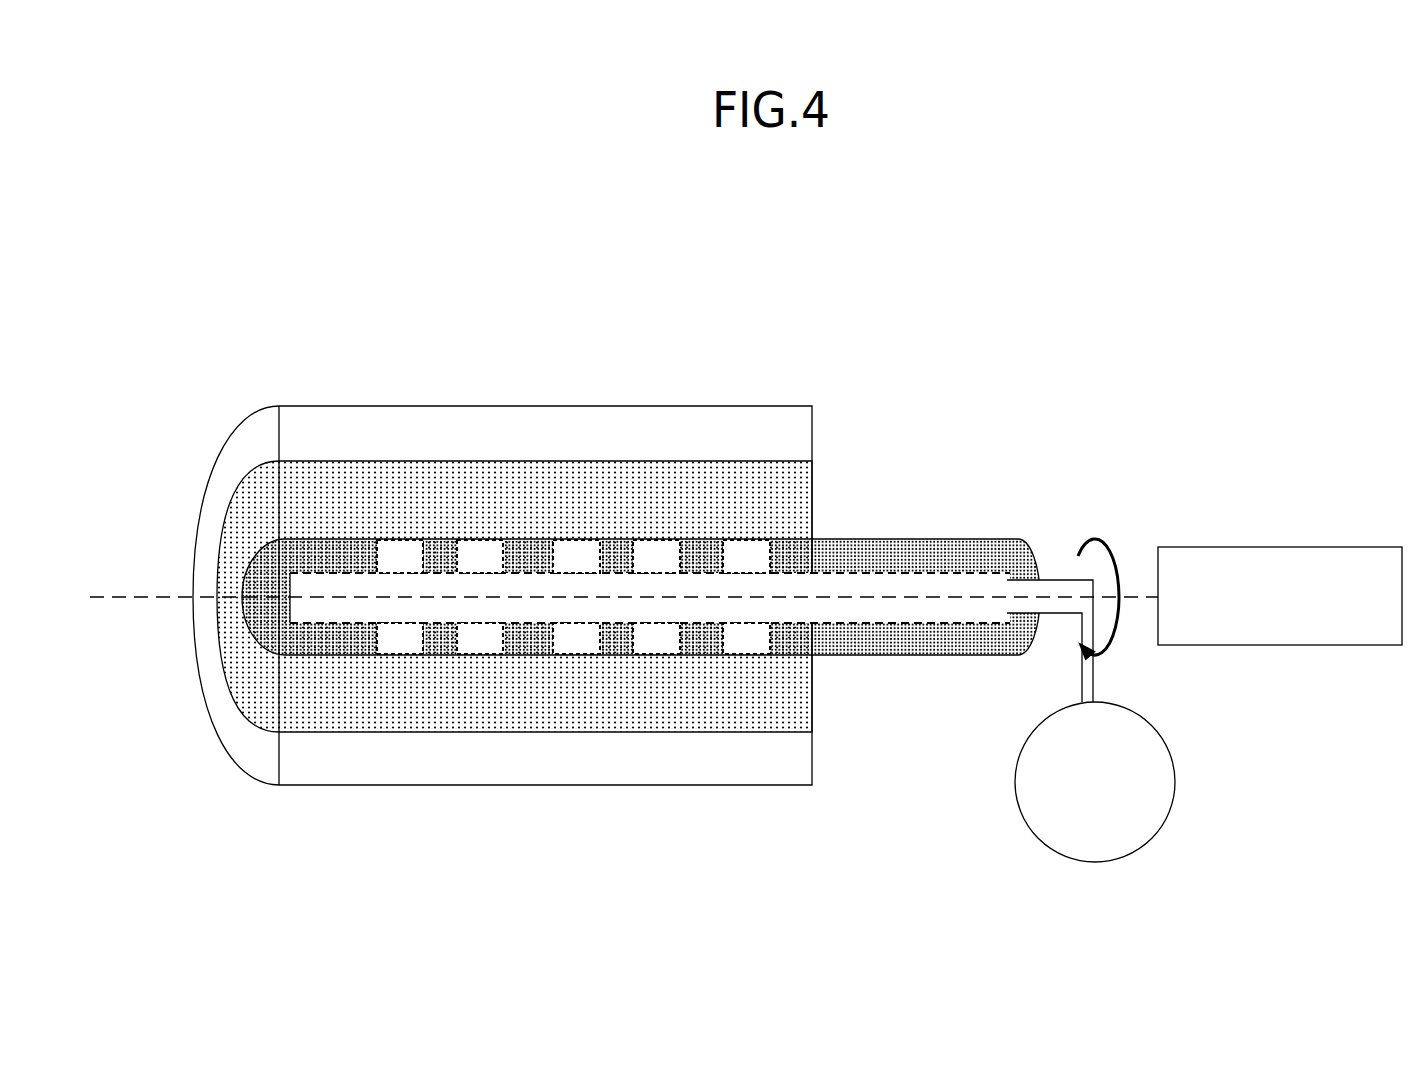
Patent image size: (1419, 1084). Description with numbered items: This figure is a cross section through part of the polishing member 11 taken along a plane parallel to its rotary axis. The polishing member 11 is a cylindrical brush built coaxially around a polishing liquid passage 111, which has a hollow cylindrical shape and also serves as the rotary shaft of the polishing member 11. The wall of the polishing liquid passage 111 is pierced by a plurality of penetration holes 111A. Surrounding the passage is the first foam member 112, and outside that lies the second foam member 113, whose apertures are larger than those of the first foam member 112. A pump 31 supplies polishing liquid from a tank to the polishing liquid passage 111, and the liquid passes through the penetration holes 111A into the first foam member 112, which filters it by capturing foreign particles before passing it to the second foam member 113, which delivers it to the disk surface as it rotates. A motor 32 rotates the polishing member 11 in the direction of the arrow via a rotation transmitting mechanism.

The polishing member 11 is at (570, 557).
The polishing liquid passage 111 is at (570, 521).
The penetration holes 111A is at (385, 547).
The first foam member 112 is at (802, 706).
The second foam member 113 is at (802, 760).
The pump 31 is at (1158, 828).
The motor 32 is at (1325, 547).